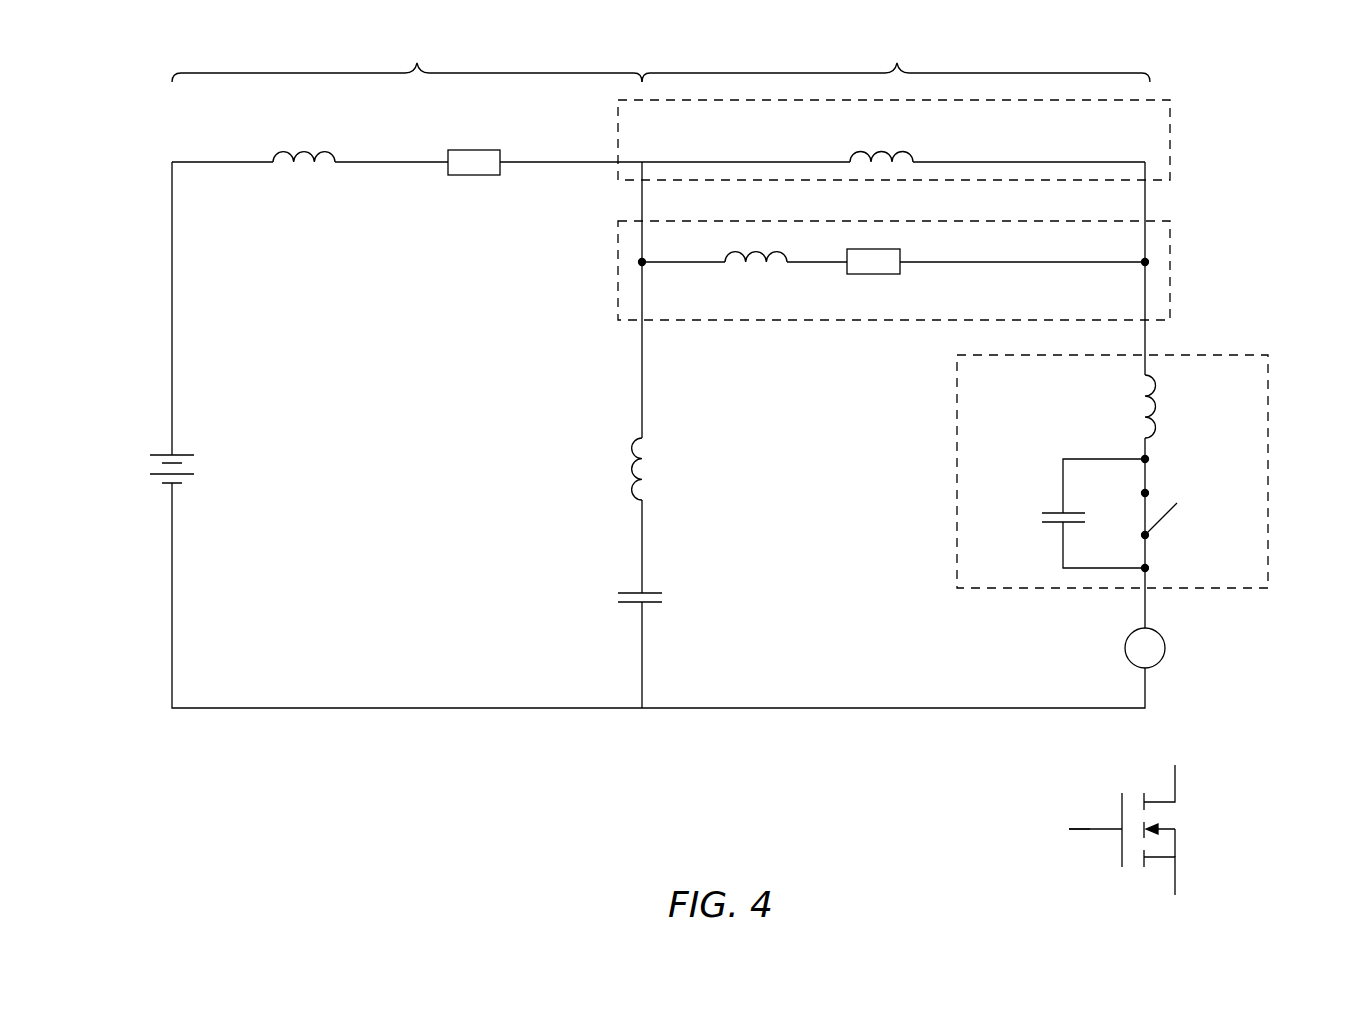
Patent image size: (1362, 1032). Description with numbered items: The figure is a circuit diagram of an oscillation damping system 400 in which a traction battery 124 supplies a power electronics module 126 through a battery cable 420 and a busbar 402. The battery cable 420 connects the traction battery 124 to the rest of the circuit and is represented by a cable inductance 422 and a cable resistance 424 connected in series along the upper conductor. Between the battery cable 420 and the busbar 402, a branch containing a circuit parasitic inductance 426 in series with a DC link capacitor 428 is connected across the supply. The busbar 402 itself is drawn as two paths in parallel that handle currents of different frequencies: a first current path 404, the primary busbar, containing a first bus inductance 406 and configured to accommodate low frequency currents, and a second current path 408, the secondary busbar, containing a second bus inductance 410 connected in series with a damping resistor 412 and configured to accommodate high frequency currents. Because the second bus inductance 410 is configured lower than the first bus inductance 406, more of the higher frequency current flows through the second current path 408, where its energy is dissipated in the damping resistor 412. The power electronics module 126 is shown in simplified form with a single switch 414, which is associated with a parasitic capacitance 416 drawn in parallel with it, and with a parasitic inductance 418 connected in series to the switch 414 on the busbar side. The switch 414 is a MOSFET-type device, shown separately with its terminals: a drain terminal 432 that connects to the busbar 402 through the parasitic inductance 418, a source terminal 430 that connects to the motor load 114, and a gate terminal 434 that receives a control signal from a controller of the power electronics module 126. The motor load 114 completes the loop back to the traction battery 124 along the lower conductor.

The oscillation damping system 400 is at (745, 845).
The battery cable 420 is at (378, 48).
The busbar 402 is at (850, 48).
The cable inductance 422 is at (305, 150).
The cable resistance 424 is at (473, 150).
The first current path 404 is at (1172, 118).
The first bus inductance 406 is at (918, 136).
The second current path 408 is at (1172, 236).
The second bus inductance 410 is at (722, 284).
The damping resistor 412 is at (901, 272).
The power electronics module 126 is at (1272, 378).
The parasitic inductance 418 is at (1160, 402).
The parasitic capacitance 416 is at (1050, 508).
The switch 414 is at (1163, 520).
The gate terminal 434 is at (1093, 827).
The drain terminal 432 is at (1205, 766).
The source terminal 430 is at (1205, 896).
The motor load 114 is at (1166, 648).
The traction battery 124 is at (160, 450).
The circuit parasitic inductance 426 is at (625, 470).
The DC link capacitor 428 is at (618, 598).